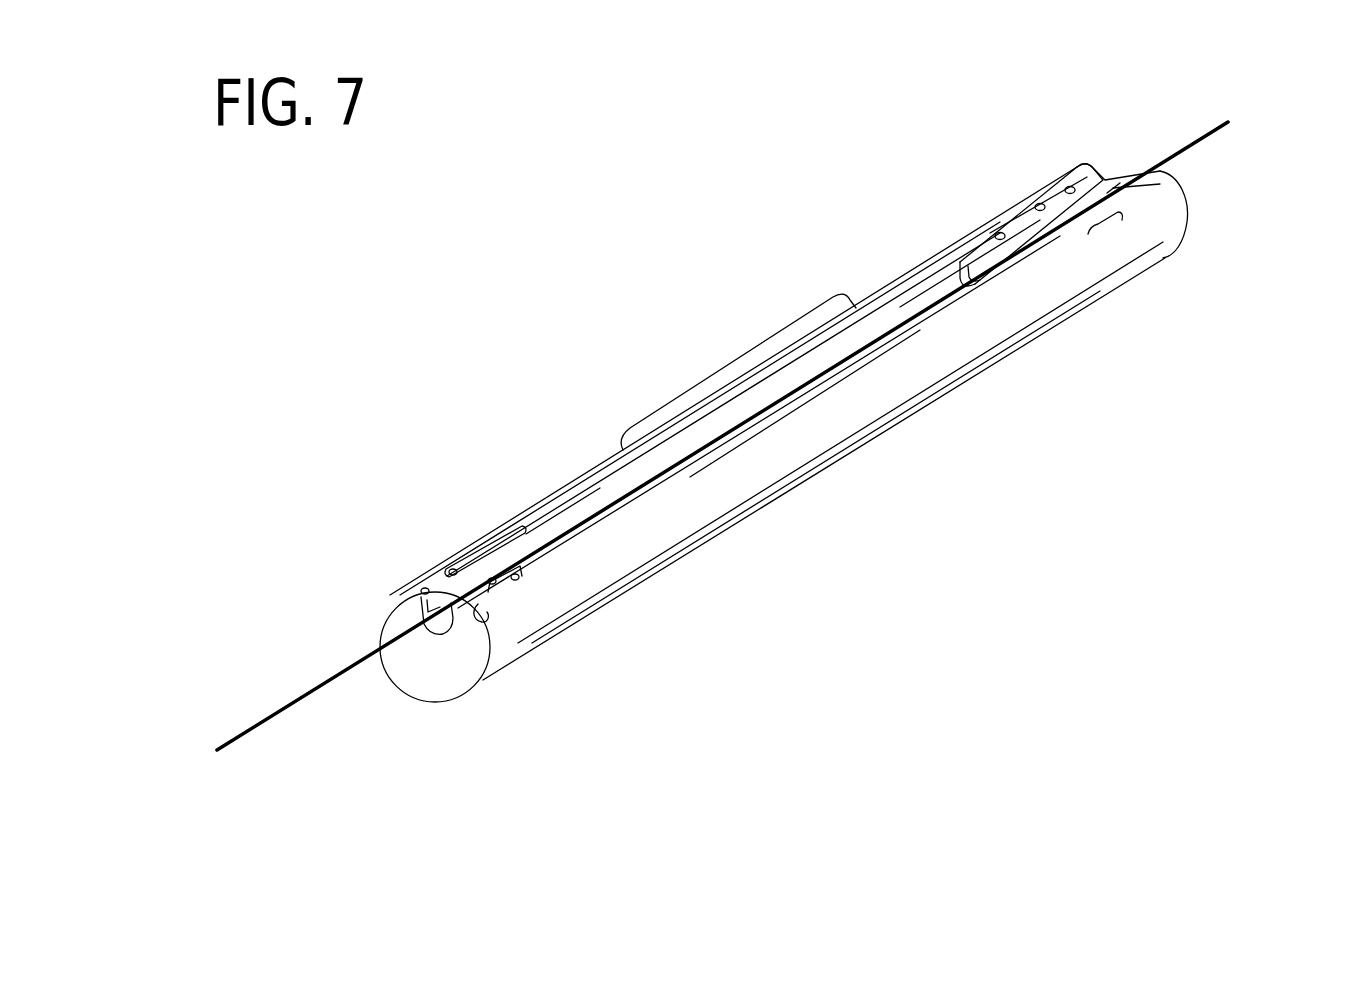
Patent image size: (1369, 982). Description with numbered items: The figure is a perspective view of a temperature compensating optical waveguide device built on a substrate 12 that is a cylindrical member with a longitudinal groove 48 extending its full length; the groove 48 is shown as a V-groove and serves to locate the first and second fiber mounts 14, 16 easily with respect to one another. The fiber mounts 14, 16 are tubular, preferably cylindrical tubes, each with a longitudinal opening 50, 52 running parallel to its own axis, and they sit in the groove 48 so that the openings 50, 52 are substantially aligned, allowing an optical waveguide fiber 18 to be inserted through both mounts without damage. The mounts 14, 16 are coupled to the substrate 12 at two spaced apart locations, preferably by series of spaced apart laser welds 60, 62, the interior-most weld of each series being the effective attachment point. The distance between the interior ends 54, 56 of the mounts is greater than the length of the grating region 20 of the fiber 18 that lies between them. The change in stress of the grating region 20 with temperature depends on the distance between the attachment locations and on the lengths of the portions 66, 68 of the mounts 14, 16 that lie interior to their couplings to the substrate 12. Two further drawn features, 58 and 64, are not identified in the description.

The substrate 12 is at (810, 452).
The first fiber mount 14 is at (440, 597).
The second fiber mount 16 is at (988, 235).
The optical waveguide fiber 18 is at (1183, 135).
The grating region 20 is at (731, 362).
The longitudinal groove 48 is at (912, 290).
The longitudinal opening 50 is at (560, 515).
The longitudinal opening 52 is at (1095, 168).
The interior end 54 is at (598, 545).
The interior end 56 is at (963, 262).
The hook 58 is at (503, 578).
The welds 60 is at (1115, 225).
The welds 62 is at (548, 552).
The fastener 64 is at (1040, 220).
The portion of the first fiber mount 66 is at (522, 527).
The portion of the second fiber mount 68 is at (972, 248).